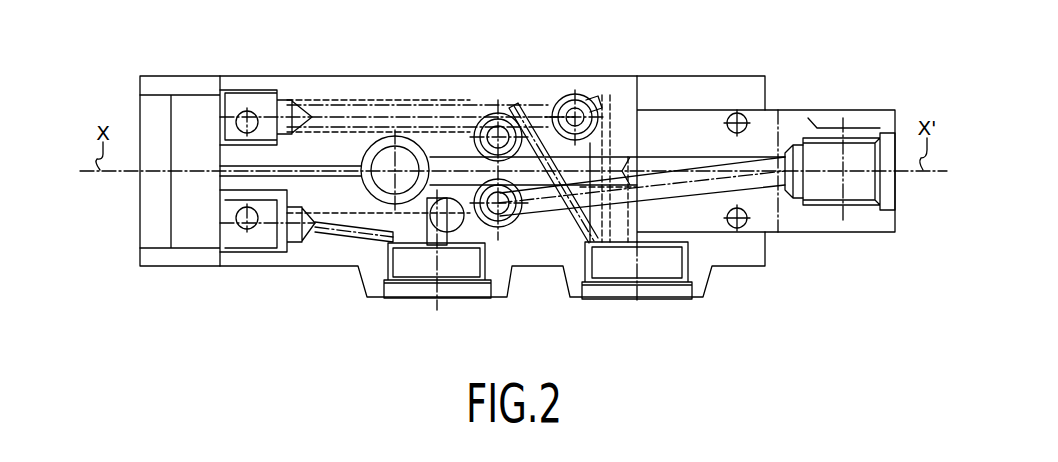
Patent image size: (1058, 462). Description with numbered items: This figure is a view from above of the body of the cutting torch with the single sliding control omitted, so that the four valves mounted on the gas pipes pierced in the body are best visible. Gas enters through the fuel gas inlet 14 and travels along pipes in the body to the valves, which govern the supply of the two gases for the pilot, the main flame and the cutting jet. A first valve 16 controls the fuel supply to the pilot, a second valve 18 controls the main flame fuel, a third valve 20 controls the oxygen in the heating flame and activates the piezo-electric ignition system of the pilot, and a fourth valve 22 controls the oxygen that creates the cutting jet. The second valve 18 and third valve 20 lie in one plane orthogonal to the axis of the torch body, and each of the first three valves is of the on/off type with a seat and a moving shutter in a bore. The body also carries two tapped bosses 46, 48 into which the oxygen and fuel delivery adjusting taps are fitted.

The fuel gas inlet 14 is at (853, 152).
The first valve 16 is at (578, 110).
The second valve 18 is at (493, 128).
The third valve 20 is at (482, 228).
The fourth valve 22 is at (387, 158).
The tapped boss 46 is at (688, 265).
The tapped boss 48 is at (417, 267).